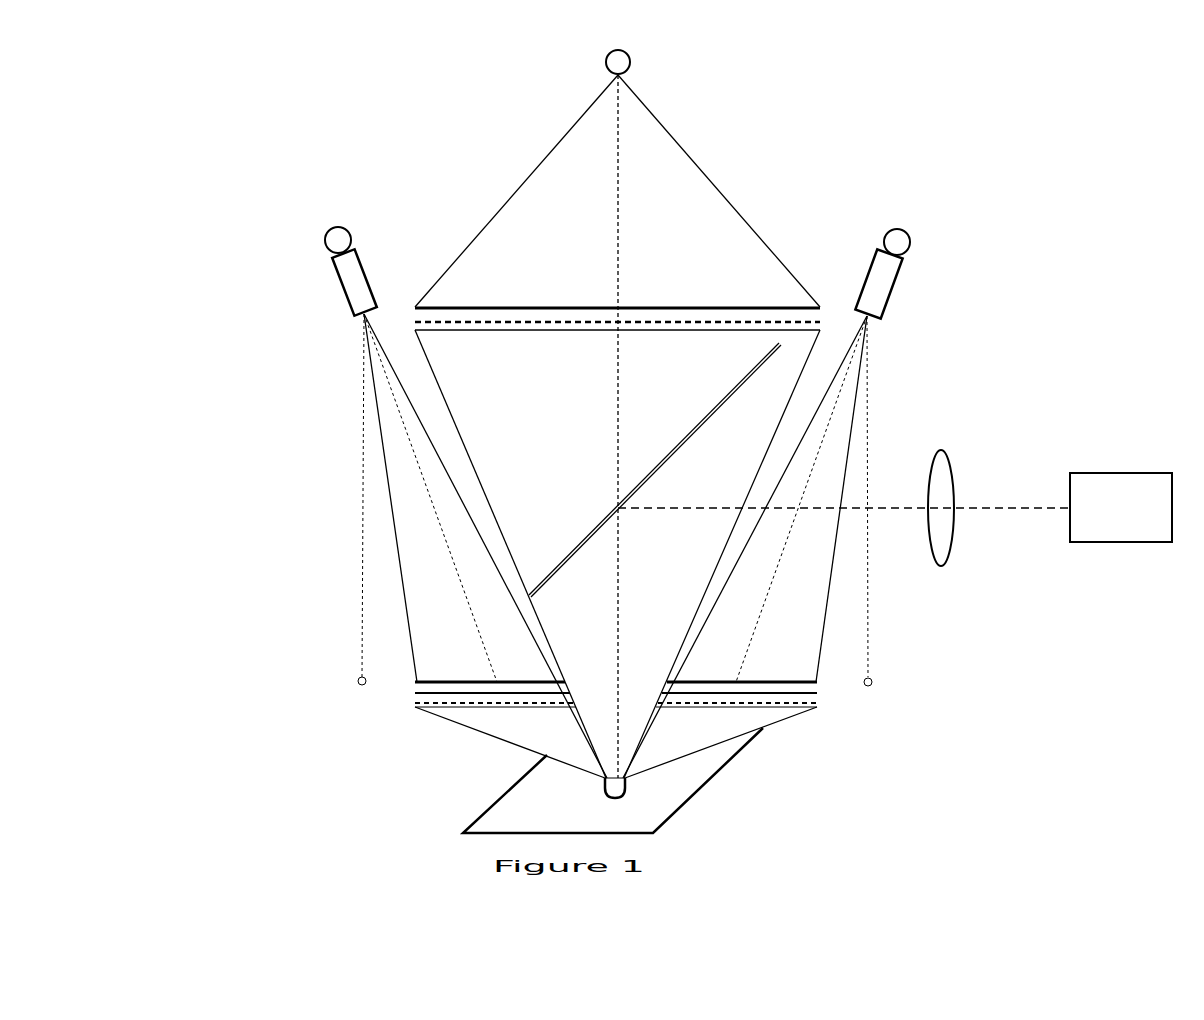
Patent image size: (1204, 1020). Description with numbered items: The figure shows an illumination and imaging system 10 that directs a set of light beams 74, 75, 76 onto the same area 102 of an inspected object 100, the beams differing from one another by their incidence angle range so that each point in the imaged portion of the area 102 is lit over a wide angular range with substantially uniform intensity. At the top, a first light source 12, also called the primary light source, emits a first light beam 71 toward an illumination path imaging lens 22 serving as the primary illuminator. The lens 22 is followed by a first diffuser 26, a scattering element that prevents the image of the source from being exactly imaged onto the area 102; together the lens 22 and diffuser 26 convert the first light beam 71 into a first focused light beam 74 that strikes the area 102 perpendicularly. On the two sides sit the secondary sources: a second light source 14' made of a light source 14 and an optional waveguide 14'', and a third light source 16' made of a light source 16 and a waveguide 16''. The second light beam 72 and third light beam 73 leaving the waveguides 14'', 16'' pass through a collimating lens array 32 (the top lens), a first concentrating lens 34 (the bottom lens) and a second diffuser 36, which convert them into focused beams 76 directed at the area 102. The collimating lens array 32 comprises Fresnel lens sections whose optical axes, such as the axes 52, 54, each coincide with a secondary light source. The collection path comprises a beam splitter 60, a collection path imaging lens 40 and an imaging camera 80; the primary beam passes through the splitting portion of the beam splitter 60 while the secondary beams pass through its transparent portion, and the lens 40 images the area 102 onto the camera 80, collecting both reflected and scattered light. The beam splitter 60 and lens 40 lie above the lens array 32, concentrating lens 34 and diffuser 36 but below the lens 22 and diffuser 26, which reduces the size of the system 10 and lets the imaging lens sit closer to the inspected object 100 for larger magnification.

The system 10 is at (363, 839).
The first light source 12 is at (688, 72).
The light source 14 is at (324, 280).
The second light source 14' is at (364, 220).
The waveguide 14'' is at (379, 270).
The light source 16 is at (960, 262).
The third light source 16' is at (926, 221).
The waveguide 16'' is at (868, 264).
The illumination path imaging lens 22 is at (820, 311).
The first diffuser 26 is at (415, 322).
The collimating lens array 32 is at (818, 684).
The first concentrating lens 34 is at (818, 698).
The second diffuser 36 is at (415, 703).
The collection path imaging lens 40 is at (946, 540).
The optical axis 52 is at (357, 682).
The optical axis 54 is at (872, 683).
The beam splitter 60 is at (600, 520).
The first light beam 71 is at (518, 187).
The second light beam 72 is at (407, 608).
The third light beam 73 is at (823, 633).
The first focused light beam 74 is at (470, 453).
The light beam 75 is at (710, 747).
The second focused light beam 76 is at (518, 745).
The imaging camera 80 is at (1122, 532).
The inspected object 100 is at (707, 785).
The area 102 is at (605, 792).